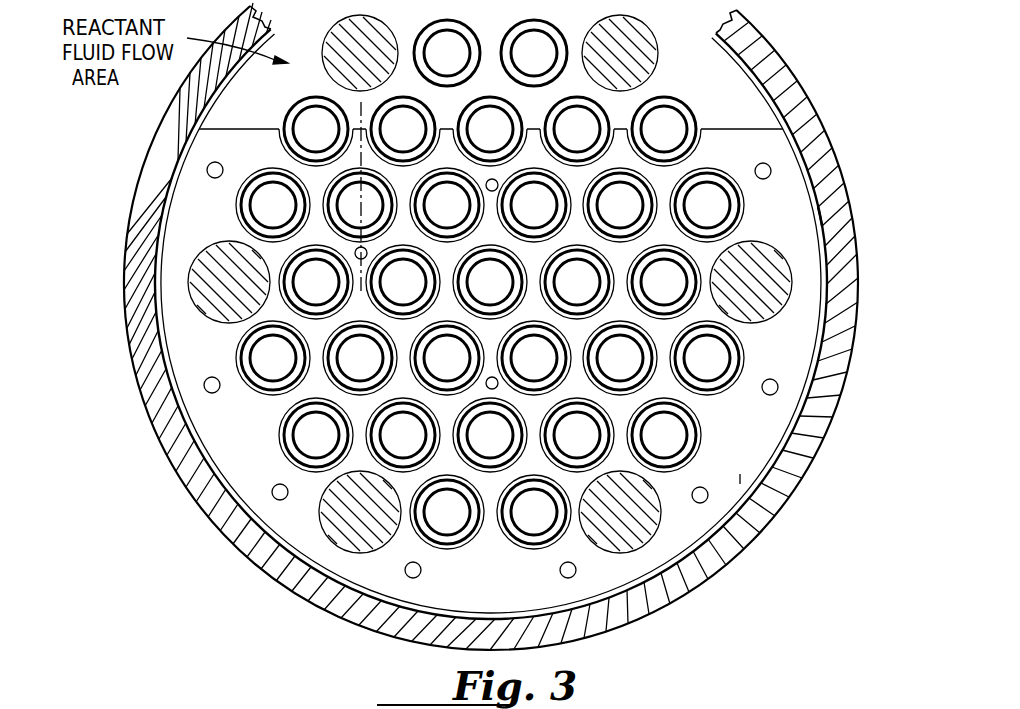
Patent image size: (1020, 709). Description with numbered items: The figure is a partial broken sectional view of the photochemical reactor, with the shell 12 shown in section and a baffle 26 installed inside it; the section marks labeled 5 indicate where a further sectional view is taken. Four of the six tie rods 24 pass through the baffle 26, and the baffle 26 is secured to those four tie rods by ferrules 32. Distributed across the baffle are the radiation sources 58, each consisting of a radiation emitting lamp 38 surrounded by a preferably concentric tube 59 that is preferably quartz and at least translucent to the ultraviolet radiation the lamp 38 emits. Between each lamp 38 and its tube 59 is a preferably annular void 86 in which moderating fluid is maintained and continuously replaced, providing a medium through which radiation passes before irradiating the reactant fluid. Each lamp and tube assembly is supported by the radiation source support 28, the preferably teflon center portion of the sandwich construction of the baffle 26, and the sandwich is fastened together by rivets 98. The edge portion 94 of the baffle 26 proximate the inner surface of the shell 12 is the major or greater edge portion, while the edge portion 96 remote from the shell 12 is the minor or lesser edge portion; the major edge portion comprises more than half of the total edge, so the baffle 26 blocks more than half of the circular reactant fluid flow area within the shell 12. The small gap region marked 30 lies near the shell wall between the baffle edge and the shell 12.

The section line 5- 5 is at (378, 276).
The shell 12 is at (788, 93).
The tie rods 24 is at (352, 42).
The baffle 26 is at (797, 231).
The radiation source support 28 is at (746, 205).
The annular gap 30 is at (740, 479).
The ferrules 32 is at (367, 553).
The lamps 38 is at (292, 437).
The radiation sources 58 is at (218, 358).
The tubes 59 is at (290, 458).
The annular voids 86 is at (563, 530).
The edge portion 94 is at (823, 333).
The edge portion 96 is at (737, 131).
The rivets 98 is at (209, 176).